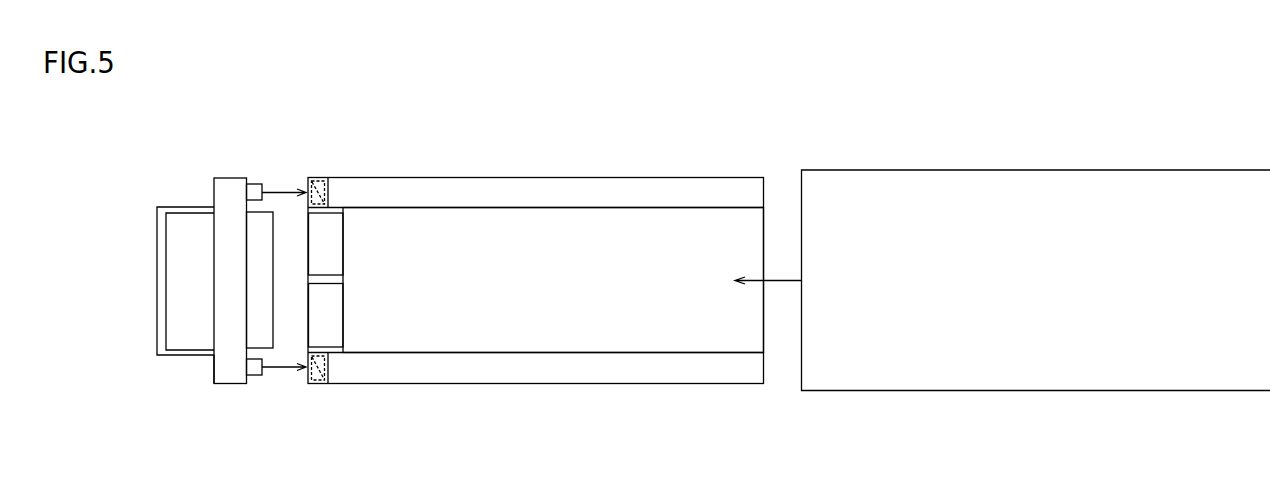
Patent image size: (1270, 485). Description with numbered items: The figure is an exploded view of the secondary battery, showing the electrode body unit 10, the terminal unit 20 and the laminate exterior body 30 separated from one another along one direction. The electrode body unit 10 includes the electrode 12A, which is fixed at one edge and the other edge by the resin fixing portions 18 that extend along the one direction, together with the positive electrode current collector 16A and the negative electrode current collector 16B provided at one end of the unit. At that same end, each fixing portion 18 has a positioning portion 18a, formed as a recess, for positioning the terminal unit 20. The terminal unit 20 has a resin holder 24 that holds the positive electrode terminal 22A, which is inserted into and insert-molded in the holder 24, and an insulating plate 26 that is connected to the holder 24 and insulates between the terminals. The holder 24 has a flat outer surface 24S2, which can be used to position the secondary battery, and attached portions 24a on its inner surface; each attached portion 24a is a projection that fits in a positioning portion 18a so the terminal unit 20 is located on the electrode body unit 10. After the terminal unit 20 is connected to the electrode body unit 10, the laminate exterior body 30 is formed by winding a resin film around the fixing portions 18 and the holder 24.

The electrode body unit 10 is at (558, 176).
The electrode 12A is at (647, 227).
The positive electrode current collector 16A is at (333, 330).
The negative electrode current collector 16B is at (332, 225).
The fixing portion 18 is at (454, 189).
The positioning portion 18a is at (311, 177).
The terminal unit 20 is at (242, 176).
The positive electrode terminal 22A is at (182, 223).
The holder 24 is at (230, 190).
The outer surface 24S2 is at (213, 366).
The attached portion 24a is at (257, 375).
The insulating plate 26 is at (157, 284).
The laminate exterior body 30 is at (1054, 169).